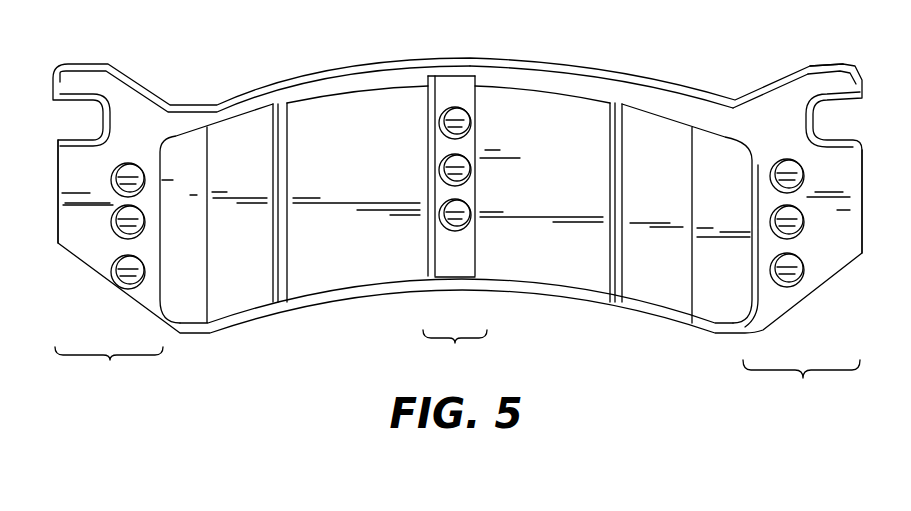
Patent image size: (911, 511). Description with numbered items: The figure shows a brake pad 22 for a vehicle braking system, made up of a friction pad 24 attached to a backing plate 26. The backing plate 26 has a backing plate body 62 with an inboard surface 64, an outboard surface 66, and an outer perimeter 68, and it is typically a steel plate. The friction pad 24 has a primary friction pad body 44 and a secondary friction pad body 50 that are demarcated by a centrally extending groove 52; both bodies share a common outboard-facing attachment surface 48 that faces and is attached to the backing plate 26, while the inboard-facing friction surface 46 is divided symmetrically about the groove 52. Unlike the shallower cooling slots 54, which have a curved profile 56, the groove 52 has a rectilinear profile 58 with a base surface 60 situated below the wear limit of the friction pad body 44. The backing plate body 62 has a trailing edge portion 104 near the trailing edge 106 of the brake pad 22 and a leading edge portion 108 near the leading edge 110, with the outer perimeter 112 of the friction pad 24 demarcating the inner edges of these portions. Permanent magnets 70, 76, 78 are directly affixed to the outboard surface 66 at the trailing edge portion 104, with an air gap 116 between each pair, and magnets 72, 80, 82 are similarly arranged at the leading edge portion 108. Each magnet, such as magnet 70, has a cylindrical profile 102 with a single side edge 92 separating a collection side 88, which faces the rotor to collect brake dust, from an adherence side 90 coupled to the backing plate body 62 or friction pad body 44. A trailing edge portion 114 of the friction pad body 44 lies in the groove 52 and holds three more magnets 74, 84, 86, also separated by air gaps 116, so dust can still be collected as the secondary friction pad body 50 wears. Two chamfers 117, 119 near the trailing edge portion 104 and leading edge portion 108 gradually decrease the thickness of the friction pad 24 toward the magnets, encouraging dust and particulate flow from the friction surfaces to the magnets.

The brake pad 22 is at (644, 53).
The friction pad 24 is at (512, 107).
The backing plate 26 is at (590, 88).
The primary friction pad body 44 is at (320, 123).
The inboard-facing friction surface 46 is at (352, 120).
The outboard-facing attachment surface 48 is at (387, 80).
The secondary friction pad body 50 is at (663, 137).
The centrally extending groove 52 is at (440, 90).
The slots 54 is at (281, 302).
The curved profile 56 is at (288, 302).
The rectilinear profile 58 is at (440, 270).
The base surface 60 is at (455, 270).
The backing plate body 62 is at (730, 117).
The inboard surface 64 is at (777, 107).
The outboard surface 66 is at (830, 60).
The outer perimeter 68 is at (853, 133).
The magnet 70 is at (128, 162).
The magnet 72 is at (785, 160).
The magnet 74 is at (457, 108).
The second magnet 76 is at (113, 230).
The third magnet 78 is at (123, 278).
The magnet 80 is at (800, 215).
The magnet 82 is at (803, 267).
The magnet 84 is at (439, 175).
The magnet 86 is at (447, 221).
The collection side 88 is at (113, 177).
The adherence side 90 is at (128, 163).
The side edge 92 is at (133, 160).
The cylindrical profile 102 is at (113, 173).
The trailing edge portion 104 is at (109, 372).
The trailing edge 106 is at (58, 222).
The leading edge portion 108 is at (801, 384).
The leading edge 110 is at (863, 218).
The outer perimeter 112 is at (553, 97).
The trailing edge portion 114 is at (455, 352).
The air gap 116 is at (117, 203).
The chamfer 117 is at (185, 310).
The chamfer 119 is at (718, 315).